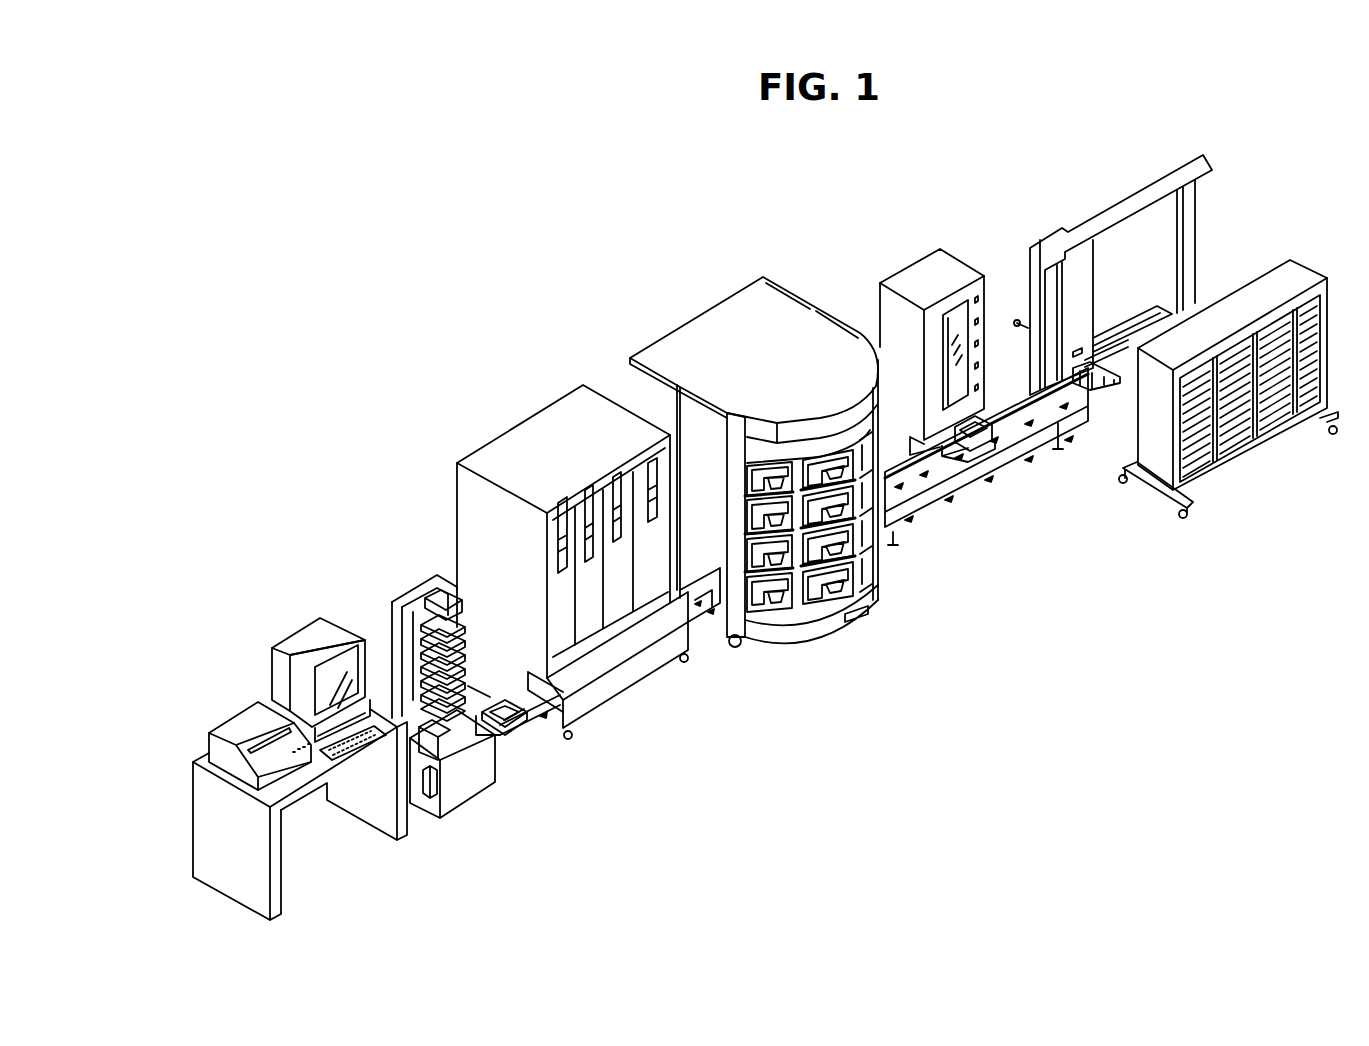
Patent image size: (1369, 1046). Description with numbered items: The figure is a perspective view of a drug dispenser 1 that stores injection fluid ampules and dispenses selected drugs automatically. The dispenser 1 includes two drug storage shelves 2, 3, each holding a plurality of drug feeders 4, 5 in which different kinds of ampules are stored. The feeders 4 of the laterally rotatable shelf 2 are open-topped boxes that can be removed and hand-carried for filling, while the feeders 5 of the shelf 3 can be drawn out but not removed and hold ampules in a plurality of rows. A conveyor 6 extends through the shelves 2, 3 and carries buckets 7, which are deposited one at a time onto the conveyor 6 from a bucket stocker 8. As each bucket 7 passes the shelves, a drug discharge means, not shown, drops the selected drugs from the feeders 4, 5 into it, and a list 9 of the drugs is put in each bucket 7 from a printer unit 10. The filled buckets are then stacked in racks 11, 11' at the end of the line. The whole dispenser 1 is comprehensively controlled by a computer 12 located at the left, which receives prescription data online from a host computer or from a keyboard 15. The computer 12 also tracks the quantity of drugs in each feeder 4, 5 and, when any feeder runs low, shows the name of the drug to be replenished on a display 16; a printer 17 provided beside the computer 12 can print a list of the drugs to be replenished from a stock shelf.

The drug dispenser 1 is at (720, 228).
The drug storage shelf 2 is at (687, 335).
The drug storage shelf 3 is at (513, 442).
The drug feeder 4 is at (817, 604).
The drug feeder 5 is at (651, 588).
The conveyor 6 is at (922, 480).
The bucket 7 is at (510, 730).
The bucket stocker 8 is at (473, 793).
The list of drugs 9 is at (994, 449).
The printer unit 10 is at (907, 272).
The rack 11 is at (1113, 275).
The rack 11' is at (1228, 340).
The computer 12 is at (297, 624).
The keyboard 15 is at (352, 762).
The display 16 is at (370, 660).
The printer 17 is at (238, 720).